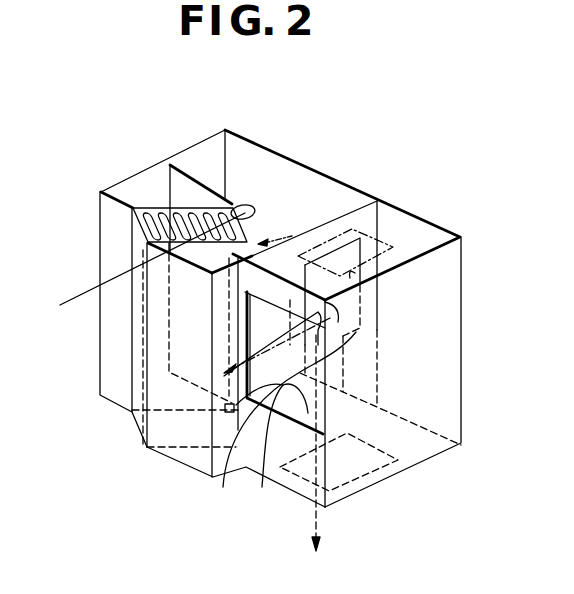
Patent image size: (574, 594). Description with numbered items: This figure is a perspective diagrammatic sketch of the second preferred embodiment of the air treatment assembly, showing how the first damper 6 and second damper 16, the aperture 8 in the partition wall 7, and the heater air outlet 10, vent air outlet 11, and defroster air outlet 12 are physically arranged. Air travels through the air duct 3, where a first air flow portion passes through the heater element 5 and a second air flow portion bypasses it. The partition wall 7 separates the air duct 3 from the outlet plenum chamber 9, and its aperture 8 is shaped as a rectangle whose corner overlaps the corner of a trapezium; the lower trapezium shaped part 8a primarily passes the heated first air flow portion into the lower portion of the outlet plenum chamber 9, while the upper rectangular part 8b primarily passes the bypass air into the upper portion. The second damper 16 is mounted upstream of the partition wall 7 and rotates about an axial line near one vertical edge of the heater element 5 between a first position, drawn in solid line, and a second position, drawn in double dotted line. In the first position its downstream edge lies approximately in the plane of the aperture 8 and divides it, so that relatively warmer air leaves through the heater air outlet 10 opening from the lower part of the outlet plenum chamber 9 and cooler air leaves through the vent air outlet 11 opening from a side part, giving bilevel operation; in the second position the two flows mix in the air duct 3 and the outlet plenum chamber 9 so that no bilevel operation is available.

The air duct 3 is at (330, 193).
The heater element 5 is at (169, 214).
The first damper 6 is at (199, 188).
The partition wall 7 is at (370, 222).
The aperture 8 is at (335, 258).
The trapezium shaped part of the aperture 8a is at (283, 410).
The rectangular part of the aperture 8b is at (370, 276).
The outlet plenum chamber 9 is at (428, 248).
The heater air outlet 10 is at (383, 466).
The vent air outlet 11 is at (279, 446).
The defroster air outlet 12 is at (393, 247).
The second damper 16 is at (254, 213).